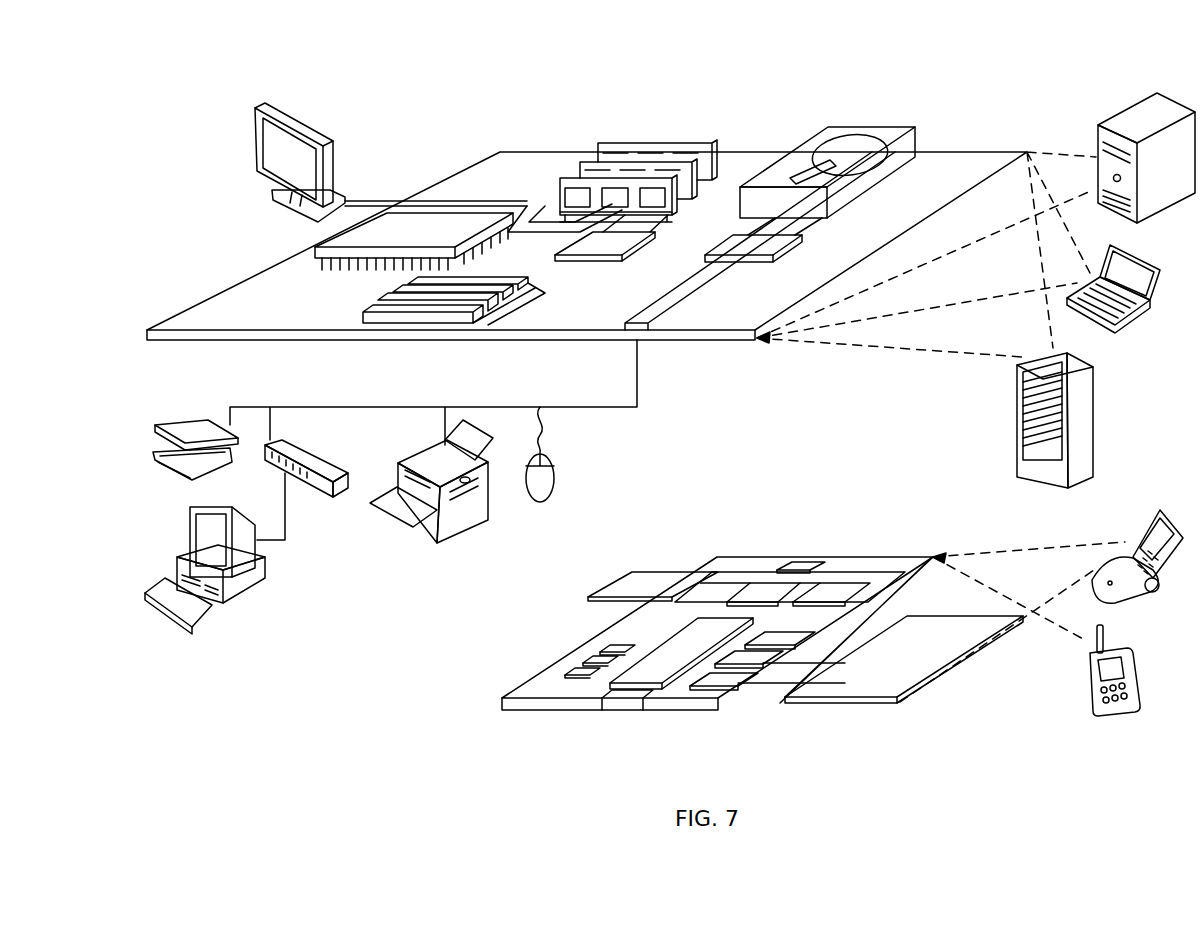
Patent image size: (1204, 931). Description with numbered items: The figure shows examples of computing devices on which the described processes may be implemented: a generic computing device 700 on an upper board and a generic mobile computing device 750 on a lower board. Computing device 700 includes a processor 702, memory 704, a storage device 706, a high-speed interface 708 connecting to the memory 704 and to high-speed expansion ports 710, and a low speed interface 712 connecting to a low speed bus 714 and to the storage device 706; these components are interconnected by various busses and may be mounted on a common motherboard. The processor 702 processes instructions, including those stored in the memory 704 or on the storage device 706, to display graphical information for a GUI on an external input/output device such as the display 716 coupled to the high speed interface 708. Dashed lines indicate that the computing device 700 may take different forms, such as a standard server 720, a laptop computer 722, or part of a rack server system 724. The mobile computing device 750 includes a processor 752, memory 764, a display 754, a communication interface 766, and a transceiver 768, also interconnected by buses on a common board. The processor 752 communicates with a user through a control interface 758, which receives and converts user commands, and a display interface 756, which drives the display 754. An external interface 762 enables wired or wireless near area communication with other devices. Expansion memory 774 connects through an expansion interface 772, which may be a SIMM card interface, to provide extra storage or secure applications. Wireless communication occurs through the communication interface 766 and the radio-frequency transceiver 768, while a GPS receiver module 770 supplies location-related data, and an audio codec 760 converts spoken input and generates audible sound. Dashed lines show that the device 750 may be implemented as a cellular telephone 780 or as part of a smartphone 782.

The computing device 700 is at (432, 126).
The processor 702 is at (317, 257).
The memory 704 is at (607, 143).
The storage device 706 is at (812, 132).
The high-speed interface 708 is at (580, 242).
The high-speed expansion ports 710 is at (383, 310).
The low speed interface 712 is at (737, 243).
The low speed bus 714 is at (653, 333).
The display 716 is at (257, 104).
The standard server 720 is at (1100, 148).
The laptop computer 722 is at (1153, 272).
The rack server system 724 is at (1017, 440).
The mobile computing device 750 is at (475, 710).
The processor 752 is at (658, 672).
The display 754 is at (867, 688).
The display interface 756 is at (720, 687).
The control interface 758 is at (745, 665).
The audio codec 760 is at (775, 648).
The external interface 762 is at (627, 690).
The memory 764 is at (582, 665).
The communication interface 766 is at (763, 588).
The transceiver 768 is at (832, 588).
The GPS receiver module 770 is at (810, 560).
The expansion interface 772 is at (700, 570).
The expansion memory 774 is at (632, 570).
The cellular telephone 780 is at (1142, 523).
The smartphone 782 is at (1092, 677).